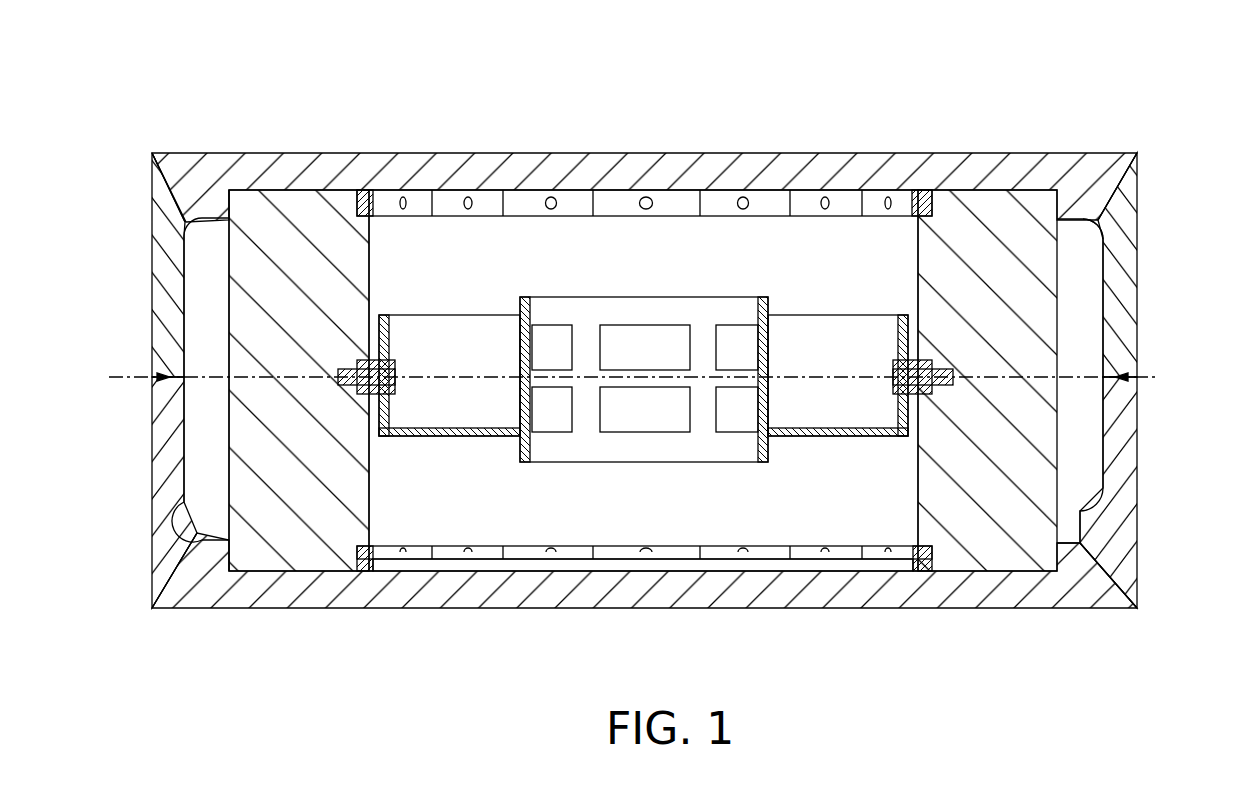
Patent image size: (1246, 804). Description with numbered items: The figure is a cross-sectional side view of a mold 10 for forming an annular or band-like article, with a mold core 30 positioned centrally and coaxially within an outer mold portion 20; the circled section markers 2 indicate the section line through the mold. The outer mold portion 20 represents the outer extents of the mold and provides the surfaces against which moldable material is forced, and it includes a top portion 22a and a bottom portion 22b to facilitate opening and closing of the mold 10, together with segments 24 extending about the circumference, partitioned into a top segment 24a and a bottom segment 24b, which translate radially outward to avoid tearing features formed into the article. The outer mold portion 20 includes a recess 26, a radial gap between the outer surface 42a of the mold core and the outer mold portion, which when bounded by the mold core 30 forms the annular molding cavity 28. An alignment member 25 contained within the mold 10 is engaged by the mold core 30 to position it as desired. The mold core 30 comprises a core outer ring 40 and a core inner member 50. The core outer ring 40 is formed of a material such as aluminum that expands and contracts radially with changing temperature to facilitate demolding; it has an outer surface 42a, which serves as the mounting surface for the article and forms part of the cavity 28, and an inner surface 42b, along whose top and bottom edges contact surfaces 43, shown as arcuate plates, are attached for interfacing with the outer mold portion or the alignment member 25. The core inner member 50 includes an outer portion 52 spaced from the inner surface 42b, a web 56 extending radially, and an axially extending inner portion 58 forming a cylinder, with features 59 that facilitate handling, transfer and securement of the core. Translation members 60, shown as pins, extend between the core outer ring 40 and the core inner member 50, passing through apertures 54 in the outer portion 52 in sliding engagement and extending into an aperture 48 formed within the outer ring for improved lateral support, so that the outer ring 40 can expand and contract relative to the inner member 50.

The mold 10 is at (1244, 78).
The outer mold portion 20 is at (1137, 190).
The top portion 22a is at (605, 172).
The bottom portion 22b is at (200, 596).
The segments 24 is at (152, 410).
The top segment 24a is at (150, 263).
The bottom segment 24b is at (160, 530).
The alignment member 25 is at (608, 546).
The recess 26 is at (1078, 500).
The annular molding cavity 28 is at (1085, 410).
The mold core 30 is at (1100, 228).
The core outer ring 40 is at (317, 330).
The outer surface 42a is at (229, 470).
The inner surface 42b is at (372, 276).
The contact surfaces 43 is at (512, 190).
The aperture 48 is at (932, 358).
The core inner member 50 is at (750, 271).
The outer portion 52 is at (392, 330).
The apertures 54 is at (898, 410).
The web 56 is at (475, 432).
The inner portion 58 is at (570, 297).
The features 59 is at (645, 325).
The translation members 60 is at (893, 365).
The section line 2- 2 is at (633, 377).